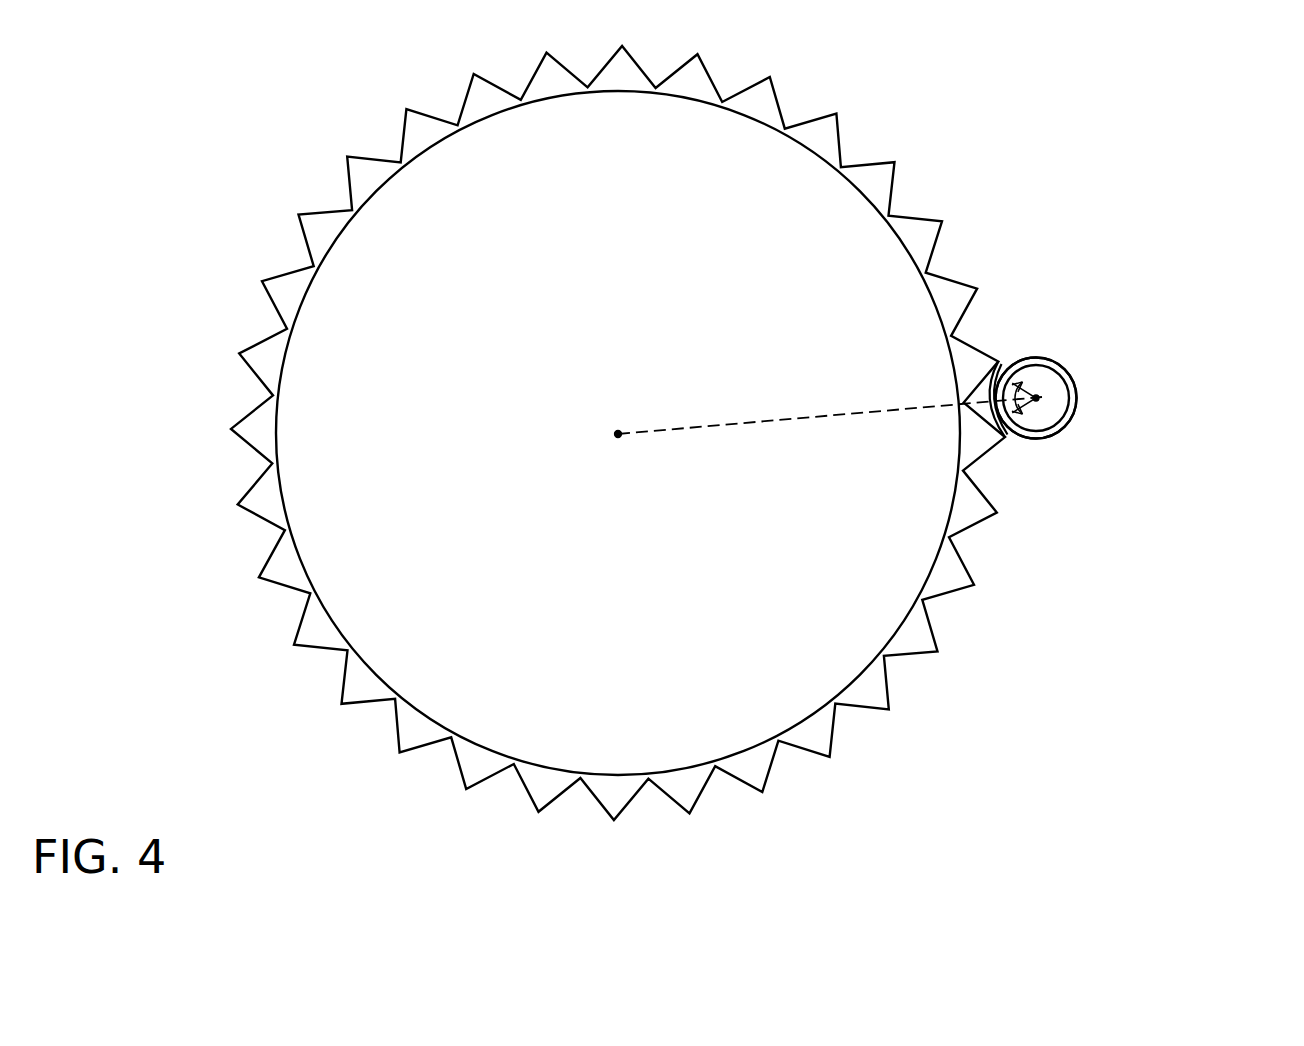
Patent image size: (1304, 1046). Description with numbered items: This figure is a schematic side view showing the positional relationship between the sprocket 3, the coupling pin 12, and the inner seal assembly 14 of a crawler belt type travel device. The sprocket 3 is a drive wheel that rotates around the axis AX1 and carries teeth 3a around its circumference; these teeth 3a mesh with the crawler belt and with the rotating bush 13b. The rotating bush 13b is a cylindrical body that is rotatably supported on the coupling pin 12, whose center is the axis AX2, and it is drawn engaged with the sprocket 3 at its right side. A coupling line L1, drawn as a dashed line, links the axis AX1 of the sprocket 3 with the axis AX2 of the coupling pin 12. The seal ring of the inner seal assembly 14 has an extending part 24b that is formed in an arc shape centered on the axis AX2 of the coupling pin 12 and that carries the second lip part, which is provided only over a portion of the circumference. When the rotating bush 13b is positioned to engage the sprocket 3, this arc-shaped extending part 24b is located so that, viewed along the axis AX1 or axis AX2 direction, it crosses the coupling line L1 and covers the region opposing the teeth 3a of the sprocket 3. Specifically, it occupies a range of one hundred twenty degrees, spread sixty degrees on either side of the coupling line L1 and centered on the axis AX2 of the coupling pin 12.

The sprocket 3 is at (828, 208).
The teeth 3a is at (840, 141).
The extending part 24b is at (973, 353).
The rotating bush 13b is at (1058, 362).
The coupling pin 12 is at (1073, 377).
The inner seal assembly 14 is at (1080, 408).
The axis of the coupling pin AX2 is at (1037, 399).
The coupling line L1 is at (778, 419).
The axis of the sprocket AX1 is at (618, 438).